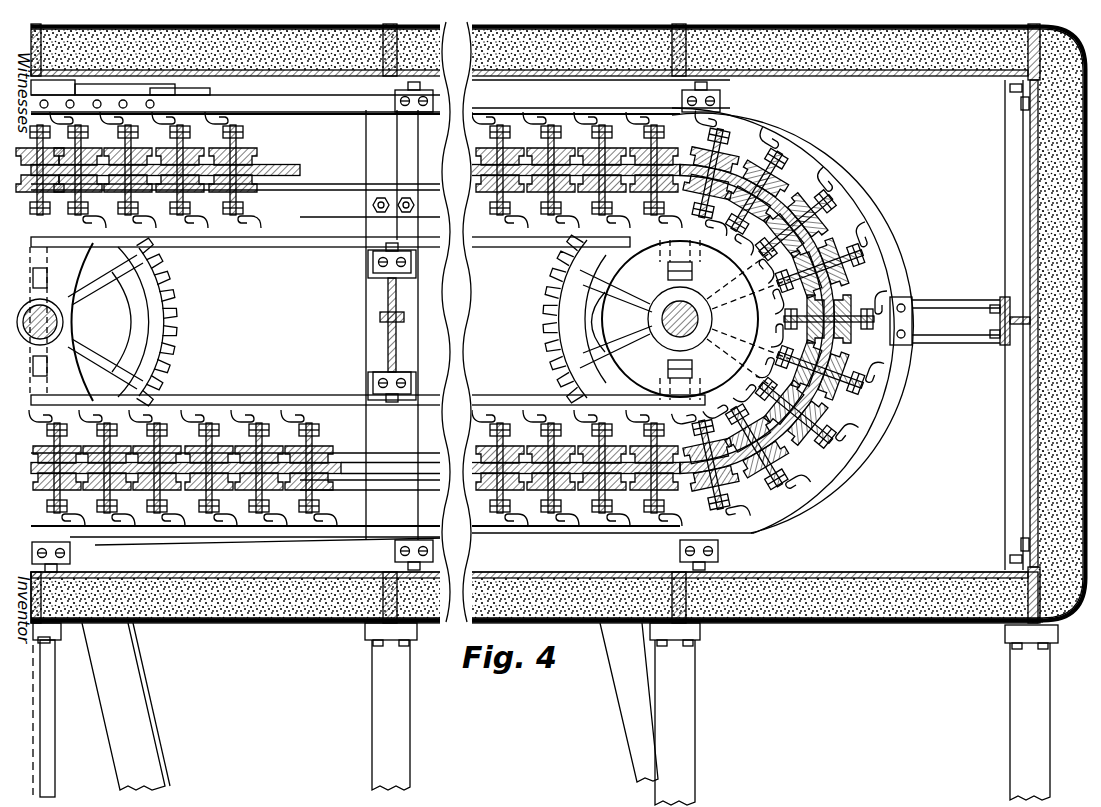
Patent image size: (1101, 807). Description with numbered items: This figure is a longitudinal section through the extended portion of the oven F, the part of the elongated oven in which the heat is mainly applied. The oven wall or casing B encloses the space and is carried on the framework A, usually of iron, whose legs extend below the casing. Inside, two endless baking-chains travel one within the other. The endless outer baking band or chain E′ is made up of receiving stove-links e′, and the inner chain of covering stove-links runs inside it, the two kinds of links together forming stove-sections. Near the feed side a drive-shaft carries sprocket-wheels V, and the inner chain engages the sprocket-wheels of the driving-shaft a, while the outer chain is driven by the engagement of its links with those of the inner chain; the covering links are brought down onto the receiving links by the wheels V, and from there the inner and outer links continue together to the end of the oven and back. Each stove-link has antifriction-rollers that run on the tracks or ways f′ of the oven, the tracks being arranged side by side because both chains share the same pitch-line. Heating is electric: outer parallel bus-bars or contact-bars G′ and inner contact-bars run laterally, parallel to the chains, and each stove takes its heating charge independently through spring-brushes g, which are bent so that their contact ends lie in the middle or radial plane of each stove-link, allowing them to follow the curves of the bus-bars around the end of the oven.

The framework A is at (545, 714).
The oven wall or casing B is at (838, 626).
The oven F is at (970, 325).
The outer bus-bar or contact-bar G′ is at (491, 320).
The tracks or ways f′ is at (433, 315).
The receiving stove-link e′ is at (148, 170).
The endless outer baking band or chain E′ is at (675, 316).
The spring-brushes g is at (458, 335).
The sprocket-wheels V is at (132, 321).
The driving-shaft a is at (55, 322).